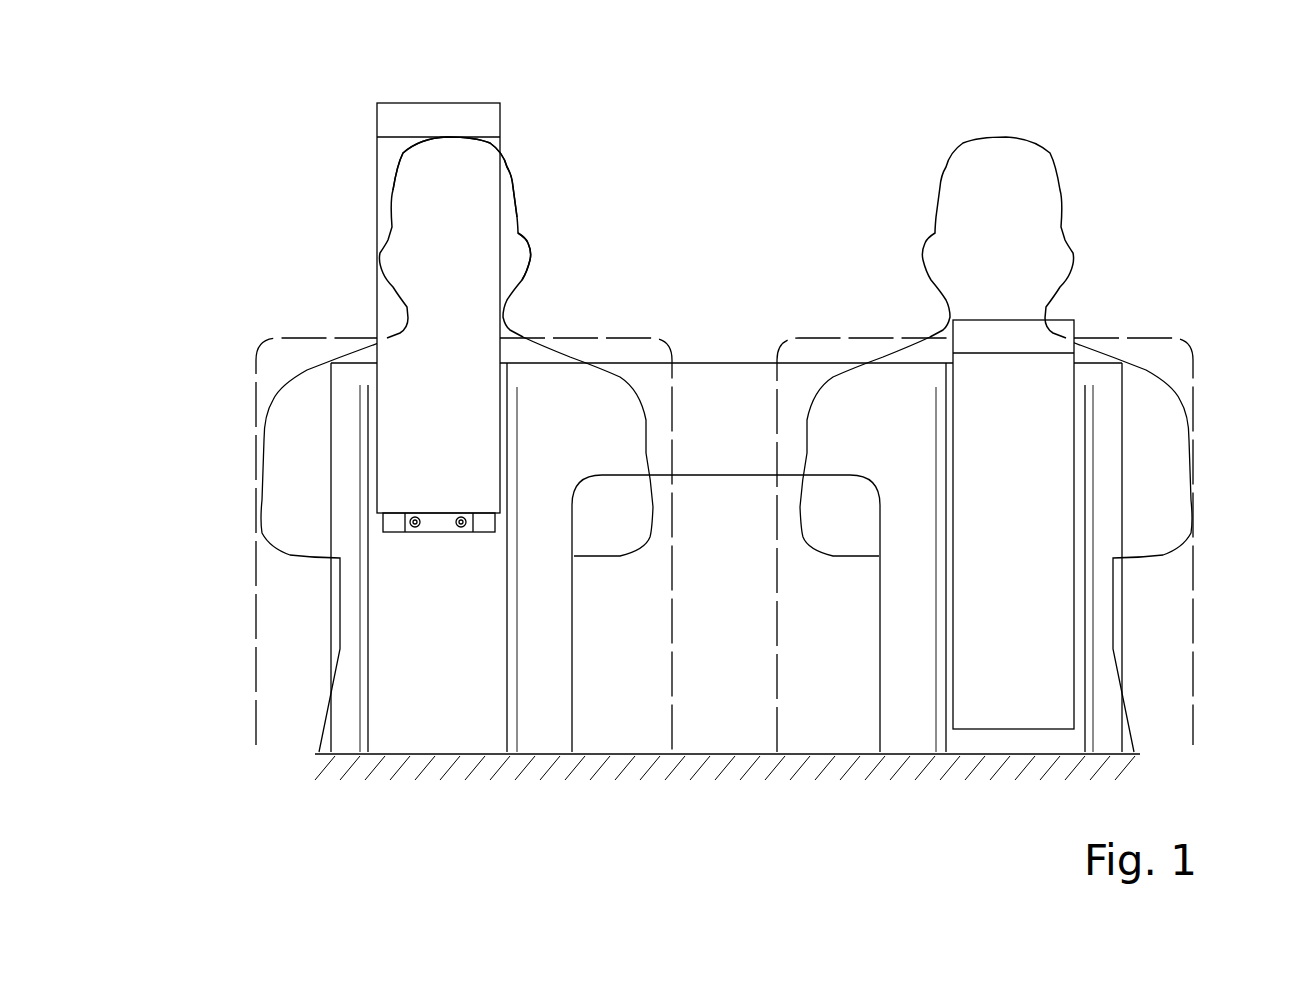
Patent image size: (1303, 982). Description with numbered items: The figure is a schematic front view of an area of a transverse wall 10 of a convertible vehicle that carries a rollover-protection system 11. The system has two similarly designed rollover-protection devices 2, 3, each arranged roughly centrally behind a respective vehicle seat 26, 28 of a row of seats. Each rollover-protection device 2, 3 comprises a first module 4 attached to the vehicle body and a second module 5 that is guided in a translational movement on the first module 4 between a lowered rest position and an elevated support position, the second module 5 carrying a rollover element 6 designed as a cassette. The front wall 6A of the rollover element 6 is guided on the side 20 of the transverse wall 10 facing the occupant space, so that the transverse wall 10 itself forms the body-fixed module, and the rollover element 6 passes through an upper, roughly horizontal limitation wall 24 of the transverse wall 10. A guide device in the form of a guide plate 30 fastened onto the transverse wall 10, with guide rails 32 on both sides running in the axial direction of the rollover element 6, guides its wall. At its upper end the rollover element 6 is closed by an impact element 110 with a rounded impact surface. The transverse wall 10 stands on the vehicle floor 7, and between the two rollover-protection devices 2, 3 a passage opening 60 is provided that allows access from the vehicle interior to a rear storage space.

The rollover-protection device 2 is at (404, 310).
The impact element 110 is at (477, 123).
The rollover element 6 is at (383, 277).
The front wall of the rollover element 6A is at (463, 217).
The second module 5 is at (508, 245).
The side of the transverse wall facing the occupant space 20 is at (335, 405).
The guide plate 30 is at (379, 522).
The guide rails 32 is at (435, 525).
The first module 4 is at (355, 599).
The rollover-protection system 11 is at (624, 169).
The vehicle seat 26 is at (603, 338).
The upper limitation wall of the transverse wall 24 is at (700, 361).
The vehicle seat 28 is at (828, 337).
The rollover-protection device 3 is at (1081, 323).
The transverse wall 10 is at (1128, 400).
The passage opening 60 is at (703, 586).
The vehicle floor 7 is at (672, 754).